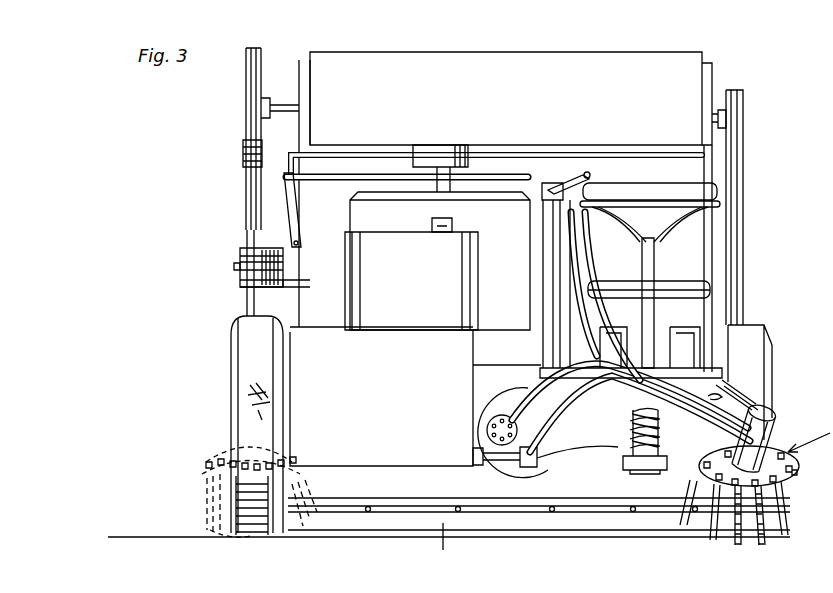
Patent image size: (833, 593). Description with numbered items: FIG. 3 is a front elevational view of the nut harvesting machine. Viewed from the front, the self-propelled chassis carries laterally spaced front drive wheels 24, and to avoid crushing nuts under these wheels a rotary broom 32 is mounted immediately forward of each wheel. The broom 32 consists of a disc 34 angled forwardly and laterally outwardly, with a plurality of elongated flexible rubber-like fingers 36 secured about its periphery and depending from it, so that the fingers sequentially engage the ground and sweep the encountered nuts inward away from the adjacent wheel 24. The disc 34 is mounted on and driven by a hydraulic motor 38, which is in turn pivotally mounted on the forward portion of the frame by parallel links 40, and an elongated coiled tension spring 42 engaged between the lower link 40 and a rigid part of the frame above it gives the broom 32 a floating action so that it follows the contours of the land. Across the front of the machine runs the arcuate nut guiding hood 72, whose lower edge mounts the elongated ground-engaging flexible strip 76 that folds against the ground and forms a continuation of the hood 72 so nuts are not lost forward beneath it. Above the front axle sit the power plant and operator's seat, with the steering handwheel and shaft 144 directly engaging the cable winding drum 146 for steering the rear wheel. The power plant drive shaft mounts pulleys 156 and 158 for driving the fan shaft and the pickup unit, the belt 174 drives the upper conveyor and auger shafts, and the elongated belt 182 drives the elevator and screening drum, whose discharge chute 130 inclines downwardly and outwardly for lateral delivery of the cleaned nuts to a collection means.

The front drive wheels 24 is at (238, 362).
The rotary broom 32 is at (204, 441).
The disc 34 is at (792, 458).
The flexible rubber-like fingers 36 is at (773, 505).
The hydraulic motor 38 is at (773, 427).
The parallel links 40 is at (737, 388).
The coiled tension spring 42 is at (703, 392).
The arcuate nut guiding hood 72 is at (580, 490).
The flexible strip 76 is at (441, 547).
The discharge chute 130 is at (651, 195).
The steering handwheel and shaft 144 is at (647, 265).
The cable winding drum 146 is at (630, 450).
The pulley 156 is at (286, 270).
The pulley 158 is at (284, 297).
The drive belt 174 is at (250, 194).
The elongated belt 182 is at (735, 193).